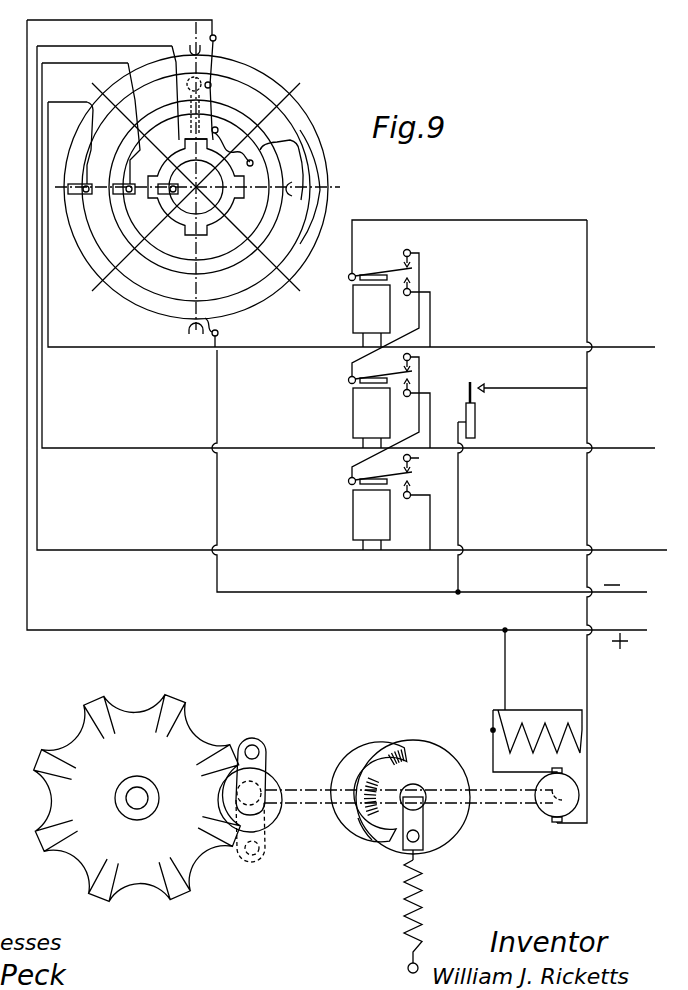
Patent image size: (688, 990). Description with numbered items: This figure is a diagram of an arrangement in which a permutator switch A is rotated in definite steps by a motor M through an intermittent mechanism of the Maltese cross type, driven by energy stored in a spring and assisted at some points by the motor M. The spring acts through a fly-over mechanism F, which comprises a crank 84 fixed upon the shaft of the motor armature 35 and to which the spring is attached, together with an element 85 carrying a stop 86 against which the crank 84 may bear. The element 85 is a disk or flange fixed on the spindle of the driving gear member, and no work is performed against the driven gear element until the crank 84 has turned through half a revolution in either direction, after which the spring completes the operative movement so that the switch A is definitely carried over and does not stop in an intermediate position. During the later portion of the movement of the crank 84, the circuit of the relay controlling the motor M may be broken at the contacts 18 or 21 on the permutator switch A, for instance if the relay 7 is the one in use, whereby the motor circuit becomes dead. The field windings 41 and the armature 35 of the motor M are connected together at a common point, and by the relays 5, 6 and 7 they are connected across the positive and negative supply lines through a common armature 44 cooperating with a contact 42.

The permutator switch A is at (92, 302).
The contact 18 is at (190, 139).
The contact 21 is at (262, 128).
The relay 5 is at (390, 314).
The relay 6 is at (390, 416).
The relay 7 is at (390, 503).
The contact 42 is at (479, 387).
The common armature 44 is at (473, 401).
The field windings 41 is at (537, 730).
The motor M is at (542, 807).
The motor armature 35 is at (560, 810).
The fly-over mechanism F is at (413, 765).
The stop 86 is at (369, 790).
The element 85 is at (368, 833).
The crank 84 is at (424, 818).